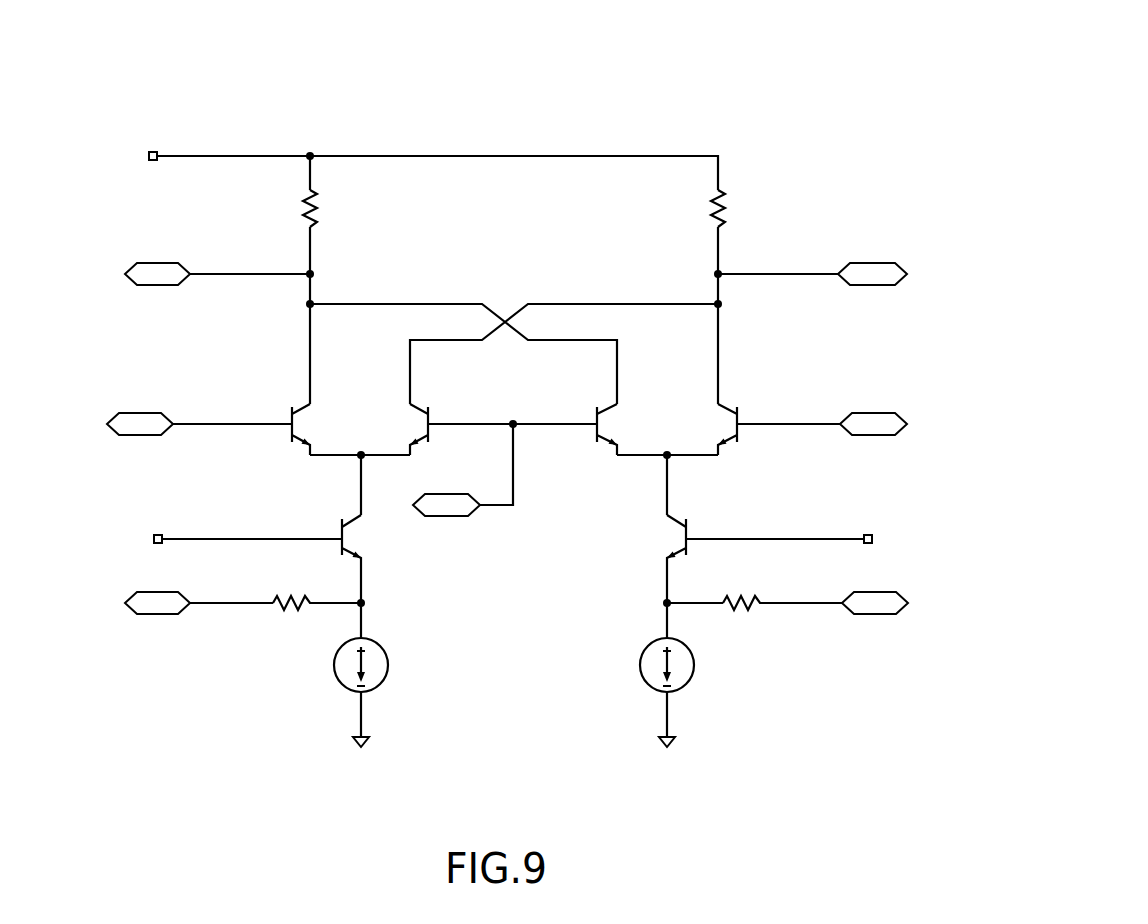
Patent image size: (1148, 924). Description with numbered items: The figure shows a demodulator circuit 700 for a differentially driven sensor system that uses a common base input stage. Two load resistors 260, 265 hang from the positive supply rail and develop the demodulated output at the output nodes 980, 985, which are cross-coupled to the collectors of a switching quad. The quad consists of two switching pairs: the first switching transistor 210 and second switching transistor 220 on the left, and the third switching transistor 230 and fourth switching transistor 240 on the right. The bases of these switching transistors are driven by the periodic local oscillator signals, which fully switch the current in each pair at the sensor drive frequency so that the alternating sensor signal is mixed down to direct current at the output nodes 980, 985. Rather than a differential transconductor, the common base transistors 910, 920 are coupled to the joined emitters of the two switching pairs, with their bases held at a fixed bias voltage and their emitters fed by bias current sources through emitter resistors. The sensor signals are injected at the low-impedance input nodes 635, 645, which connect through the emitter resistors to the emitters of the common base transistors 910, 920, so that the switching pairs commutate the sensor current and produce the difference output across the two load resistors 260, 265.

The demodulator circuit 700 is at (783, 74).
The load resistor Rcp 260 is at (321, 203).
The load resistor Rcn 265 is at (726, 213).
The IF+ output port 980 is at (178, 286).
The IF- output port 985 is at (858, 262).
The switching transistor Qsw1p 210 is at (312, 416).
The switching transistor Qsw1n 220 is at (416, 421).
The switching transistor Qsw2p 230 is at (619, 416).
The switching transistor Qsw2n 240 is at (760, 441).
The common base transistor QcbP 910 is at (378, 541).
The common base transistor QcbN 920 is at (665, 541).
The RF+ node 635 is at (178, 616).
The RF− node 645 is at (849, 617).